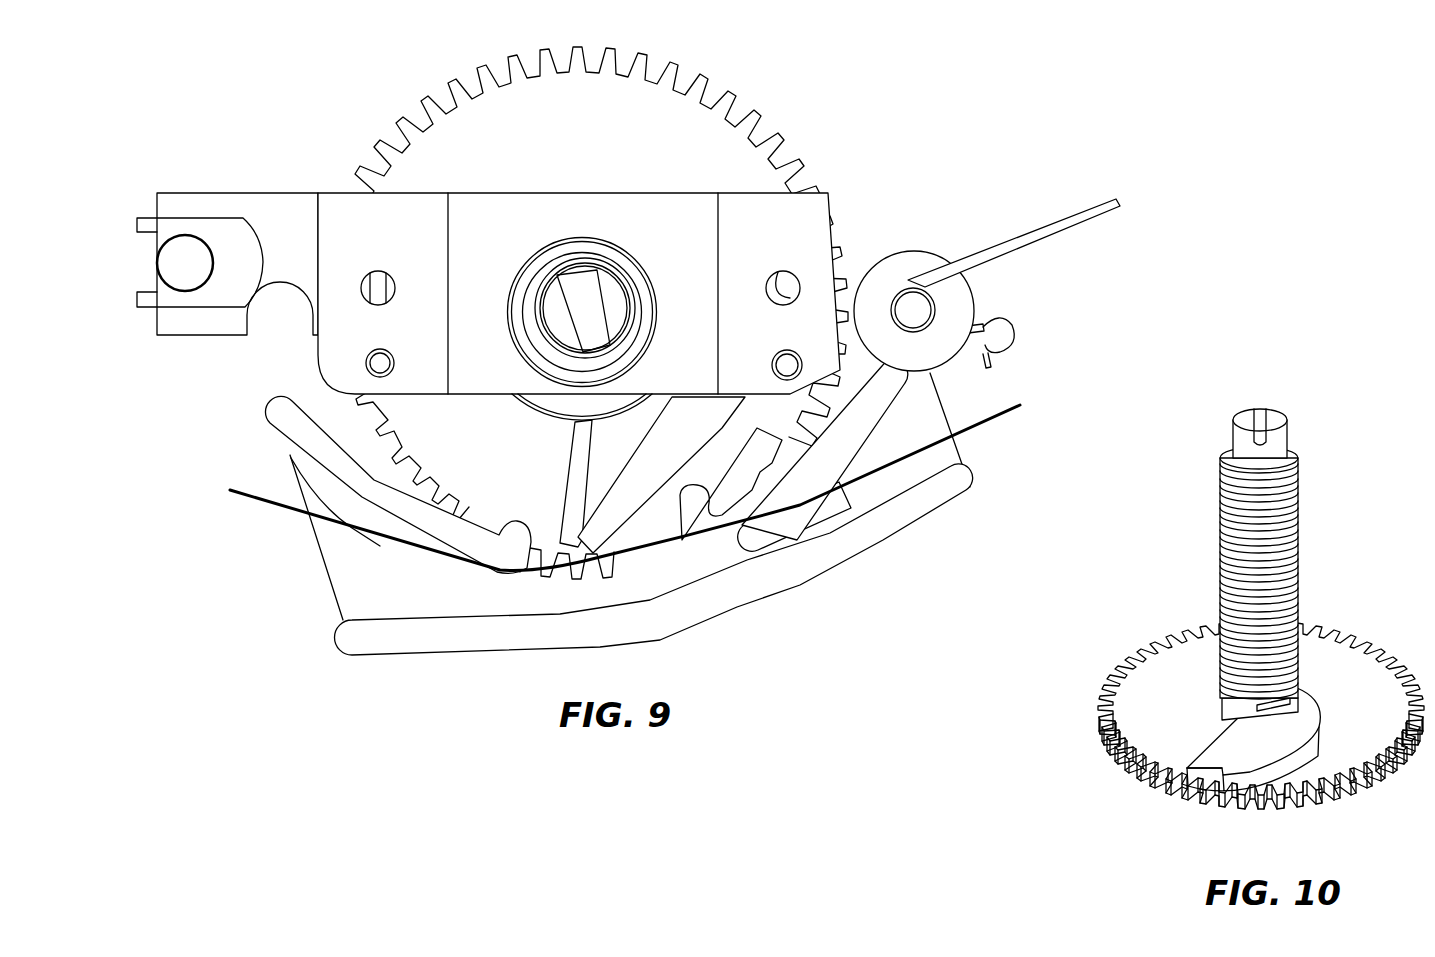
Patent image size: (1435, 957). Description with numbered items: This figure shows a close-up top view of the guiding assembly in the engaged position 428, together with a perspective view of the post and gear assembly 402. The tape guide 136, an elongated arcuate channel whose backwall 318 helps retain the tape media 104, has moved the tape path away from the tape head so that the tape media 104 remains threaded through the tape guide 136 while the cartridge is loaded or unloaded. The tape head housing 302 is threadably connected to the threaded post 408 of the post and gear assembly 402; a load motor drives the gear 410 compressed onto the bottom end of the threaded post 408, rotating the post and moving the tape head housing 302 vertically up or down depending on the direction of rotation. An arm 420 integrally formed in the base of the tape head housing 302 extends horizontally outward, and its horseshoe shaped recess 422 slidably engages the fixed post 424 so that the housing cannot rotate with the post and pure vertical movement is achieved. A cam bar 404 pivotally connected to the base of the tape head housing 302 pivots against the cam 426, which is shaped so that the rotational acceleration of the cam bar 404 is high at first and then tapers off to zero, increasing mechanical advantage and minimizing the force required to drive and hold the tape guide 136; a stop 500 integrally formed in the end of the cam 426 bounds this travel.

In FIG. 9, the tape media 104 is at (275, 510).
In FIG. 9, the tape guide 136 is at (318, 582).
In FIG. 9, the tape head housing 302 is at (548, 229).
In FIG. 9, the backwall 318 is at (888, 540).
In FIG. 10, the post and gear assembly 402 is at (1315, 559).
In FIG. 9, the cam bar 404 is at (686, 419).
In FIG. 10, the threaded post 408 is at (1297, 527).
In FIG. 10, the gear 410 is at (1347, 672).
In FIG. 9, the arm 420 is at (281, 192).
In FIG. 9, the horseshoe shaped recess 422 is at (130, 273).
In FIG. 9, the post 424 is at (190, 247).
In FIG. 9, the cam 426 is at (596, 453).
In FIG. 10, the cam 426 is at (1297, 735).
In FIG. 9, the engaged position 428 is at (987, 215).
In FIG. 10, the stop 500 is at (1183, 793).